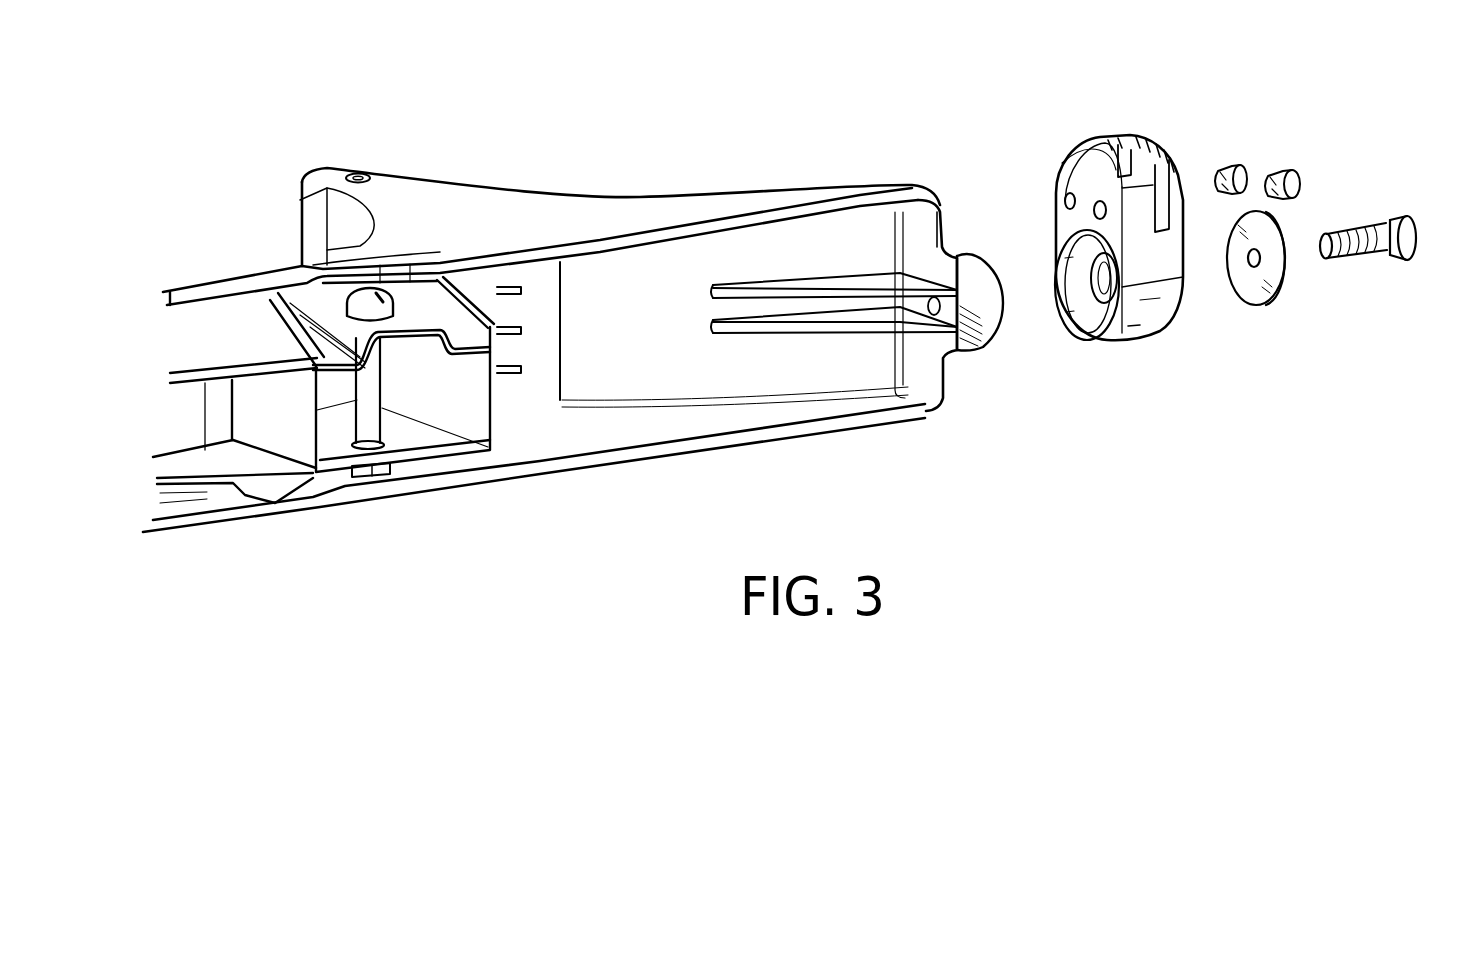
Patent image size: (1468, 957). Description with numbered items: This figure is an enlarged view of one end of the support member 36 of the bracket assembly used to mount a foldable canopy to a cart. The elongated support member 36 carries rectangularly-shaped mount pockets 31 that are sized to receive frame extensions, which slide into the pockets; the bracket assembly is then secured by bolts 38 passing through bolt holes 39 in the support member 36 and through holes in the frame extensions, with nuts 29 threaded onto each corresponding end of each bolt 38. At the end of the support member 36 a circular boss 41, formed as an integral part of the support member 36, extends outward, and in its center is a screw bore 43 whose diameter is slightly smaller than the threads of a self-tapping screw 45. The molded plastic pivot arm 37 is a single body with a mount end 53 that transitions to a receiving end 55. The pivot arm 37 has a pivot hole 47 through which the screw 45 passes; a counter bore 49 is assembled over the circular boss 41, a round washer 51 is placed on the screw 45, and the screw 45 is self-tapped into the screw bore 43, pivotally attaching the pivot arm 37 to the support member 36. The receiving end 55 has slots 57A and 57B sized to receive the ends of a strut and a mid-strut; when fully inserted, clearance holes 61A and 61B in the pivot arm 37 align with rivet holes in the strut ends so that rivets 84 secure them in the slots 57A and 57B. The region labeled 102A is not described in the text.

The nut 29 is at (380, 468).
The mount pocket 31 is at (460, 410).
The support member 36 is at (453, 200).
The pivot arm 37 is at (1170, 150).
The bolt 38 is at (371, 432).
The bolt hole 39 is at (380, 318).
The circular boss 41 is at (975, 345).
The screw bore 43 is at (364, 178).
The self-tapping screw 45 is at (1395, 222).
The pivot hole 47 is at (1107, 293).
The counter bore 49 is at (1083, 325).
The round washer 51 is at (1270, 303).
The mount end 53 is at (1152, 310).
The receiving end 55 is at (1098, 137).
The slot 57A is at (1117, 137).
The slot 57B is at (1133, 133).
The clearance hole 61A is at (1066, 194).
The clearance hole 61B is at (1095, 202).
The rivet 84 is at (1246, 165).
The arm end 102A is at (946, 212).